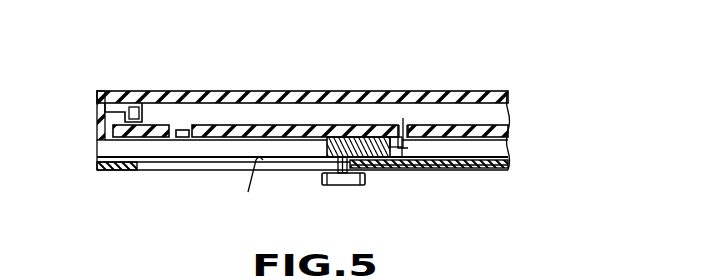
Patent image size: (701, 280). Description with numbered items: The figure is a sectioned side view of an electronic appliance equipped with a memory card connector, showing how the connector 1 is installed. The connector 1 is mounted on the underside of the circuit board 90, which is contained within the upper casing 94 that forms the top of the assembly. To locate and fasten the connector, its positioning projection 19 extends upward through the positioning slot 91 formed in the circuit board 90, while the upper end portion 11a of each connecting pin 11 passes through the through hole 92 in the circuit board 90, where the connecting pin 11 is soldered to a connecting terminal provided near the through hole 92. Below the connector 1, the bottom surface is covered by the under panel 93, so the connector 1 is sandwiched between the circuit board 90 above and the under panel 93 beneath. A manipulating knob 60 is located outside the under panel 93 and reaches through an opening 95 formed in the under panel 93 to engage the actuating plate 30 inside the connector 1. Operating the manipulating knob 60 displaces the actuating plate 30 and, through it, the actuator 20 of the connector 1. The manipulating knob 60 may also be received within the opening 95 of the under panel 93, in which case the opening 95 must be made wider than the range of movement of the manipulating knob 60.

The connector 1 is at (213, 143).
The connecting pin 11 is at (305, 163).
The upper end portion of connecting pin 11a is at (420, 168).
The positioning projection 19 is at (180, 138).
The actuator 20 is at (246, 185).
The actuating plate 30 is at (376, 160).
The manipulating knob 60 is at (343, 186).
The circuit board 90 is at (363, 124).
The positioning slot 91 is at (190, 126).
The through hole 92 is at (404, 118).
The under panel 93 is at (480, 171).
The upper casing 94 is at (270, 92).
The opening 95 is at (142, 171).